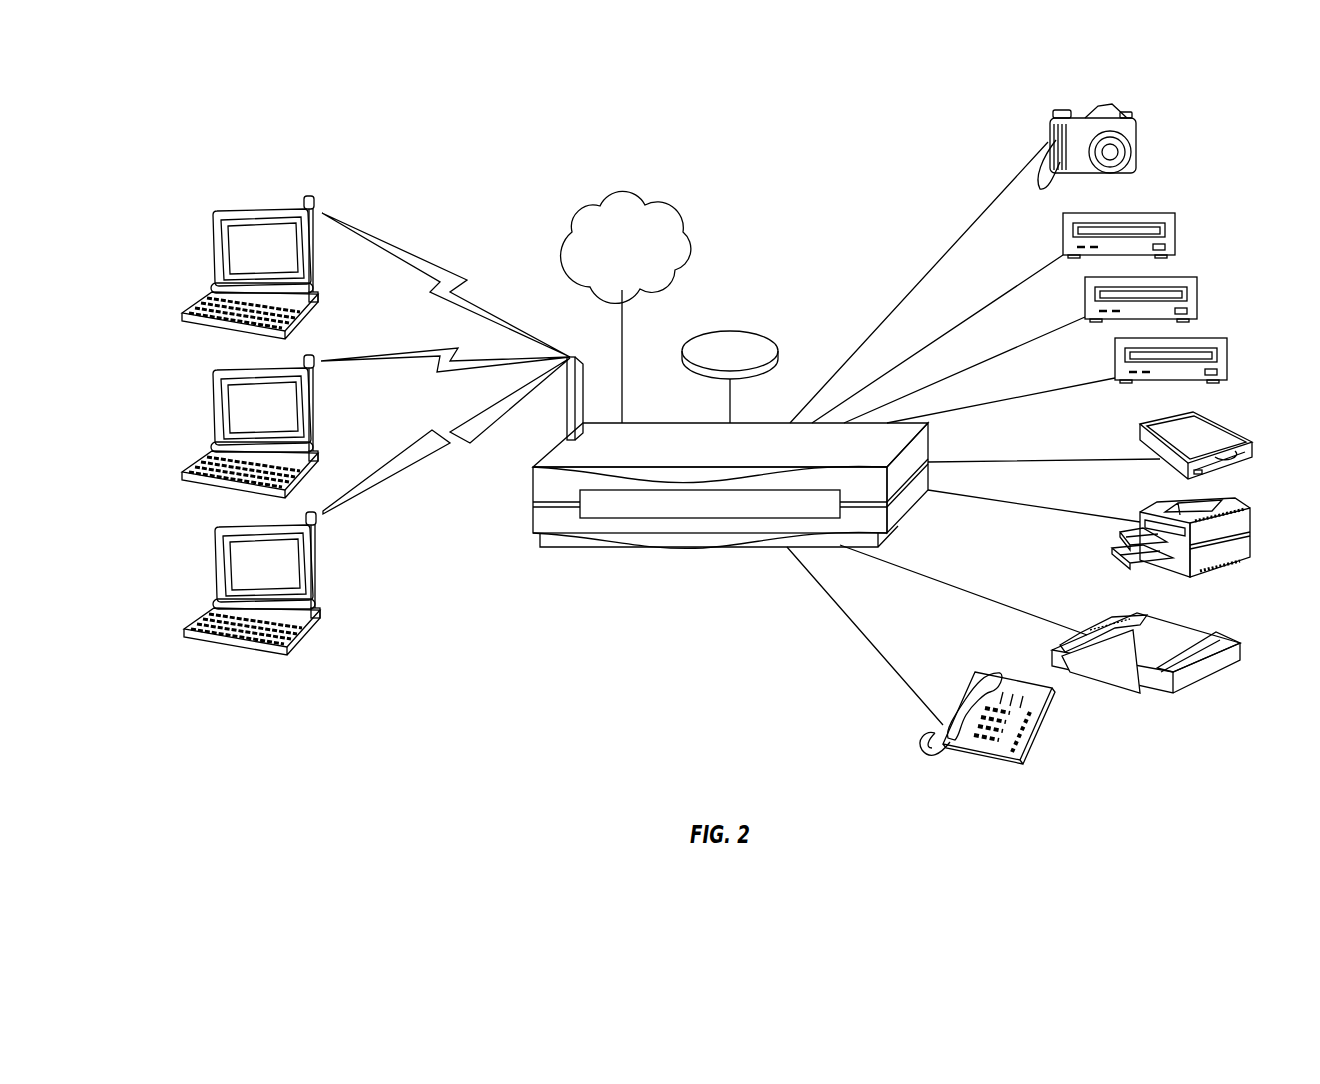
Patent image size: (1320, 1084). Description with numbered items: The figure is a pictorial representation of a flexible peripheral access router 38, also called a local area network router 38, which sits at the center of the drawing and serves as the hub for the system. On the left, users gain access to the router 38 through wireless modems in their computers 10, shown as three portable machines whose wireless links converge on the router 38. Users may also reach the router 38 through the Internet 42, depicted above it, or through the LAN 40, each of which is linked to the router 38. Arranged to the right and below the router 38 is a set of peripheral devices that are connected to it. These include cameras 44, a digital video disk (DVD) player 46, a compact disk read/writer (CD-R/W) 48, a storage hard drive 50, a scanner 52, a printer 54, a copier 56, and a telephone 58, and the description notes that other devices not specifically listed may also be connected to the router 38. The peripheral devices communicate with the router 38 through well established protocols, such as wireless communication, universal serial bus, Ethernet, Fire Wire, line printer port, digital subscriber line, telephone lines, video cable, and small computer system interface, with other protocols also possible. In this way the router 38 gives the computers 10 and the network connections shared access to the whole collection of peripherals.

The computers 10 is at (182, 313).
The peripheral access router 38 is at (533, 483).
The LAN 40 is at (722, 332).
The Internet 42 is at (598, 205).
The cameras 44 is at (1112, 109).
The digital video disk (DVD) player 46 is at (1143, 213).
The compact disk read/writer (CD-R/W) 48 is at (1173, 277).
The storage hard drive 50 is at (1202, 338).
The scanner 52 is at (1193, 413).
The printer 54 is at (1244, 507).
The copier 56 is at (1216, 632).
The telephone 58 is at (1030, 753).